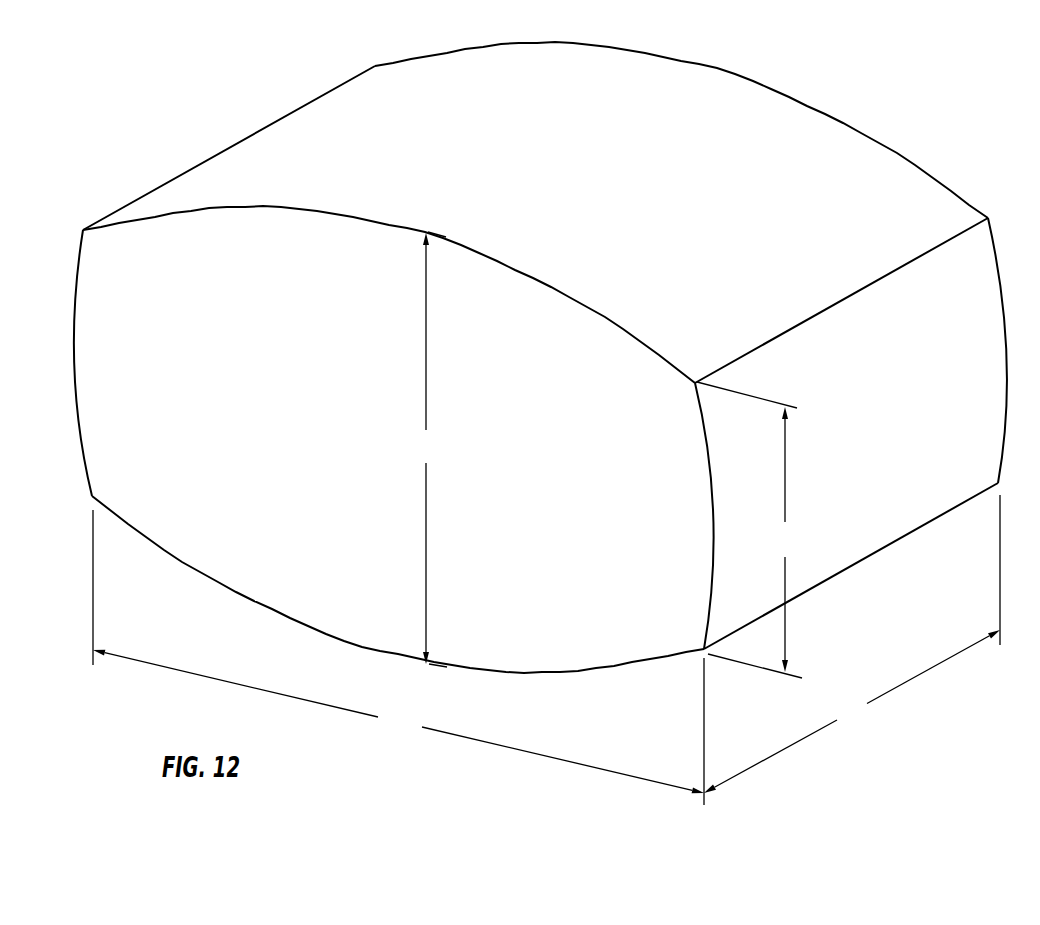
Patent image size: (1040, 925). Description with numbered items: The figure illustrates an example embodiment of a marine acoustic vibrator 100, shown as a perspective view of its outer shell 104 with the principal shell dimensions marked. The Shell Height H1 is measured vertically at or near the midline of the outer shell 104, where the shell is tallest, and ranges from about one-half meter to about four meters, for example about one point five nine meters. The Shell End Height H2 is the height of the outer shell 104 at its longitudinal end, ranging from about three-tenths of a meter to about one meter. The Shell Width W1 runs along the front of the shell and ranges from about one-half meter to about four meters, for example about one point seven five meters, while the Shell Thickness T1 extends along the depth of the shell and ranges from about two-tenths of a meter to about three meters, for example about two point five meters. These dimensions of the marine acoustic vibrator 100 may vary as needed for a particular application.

The marine acoustic vibrator 100 is at (540, 357).
The outer shell 104 is at (782, 112).
The shell height H1 is at (431, 449).
The shell end height H2 is at (749, 530).
The shell width W1 is at (398, 657).
The shell thickness T1 is at (852, 644).